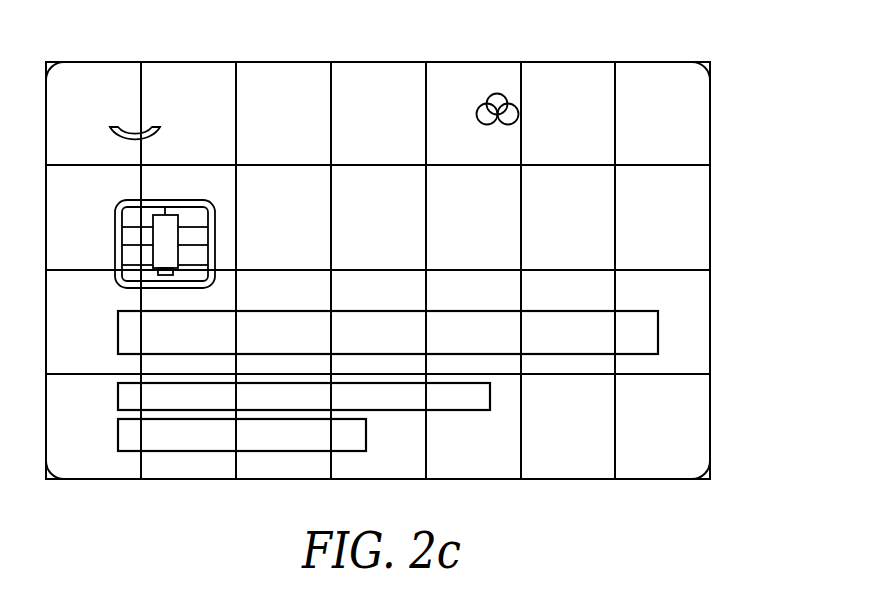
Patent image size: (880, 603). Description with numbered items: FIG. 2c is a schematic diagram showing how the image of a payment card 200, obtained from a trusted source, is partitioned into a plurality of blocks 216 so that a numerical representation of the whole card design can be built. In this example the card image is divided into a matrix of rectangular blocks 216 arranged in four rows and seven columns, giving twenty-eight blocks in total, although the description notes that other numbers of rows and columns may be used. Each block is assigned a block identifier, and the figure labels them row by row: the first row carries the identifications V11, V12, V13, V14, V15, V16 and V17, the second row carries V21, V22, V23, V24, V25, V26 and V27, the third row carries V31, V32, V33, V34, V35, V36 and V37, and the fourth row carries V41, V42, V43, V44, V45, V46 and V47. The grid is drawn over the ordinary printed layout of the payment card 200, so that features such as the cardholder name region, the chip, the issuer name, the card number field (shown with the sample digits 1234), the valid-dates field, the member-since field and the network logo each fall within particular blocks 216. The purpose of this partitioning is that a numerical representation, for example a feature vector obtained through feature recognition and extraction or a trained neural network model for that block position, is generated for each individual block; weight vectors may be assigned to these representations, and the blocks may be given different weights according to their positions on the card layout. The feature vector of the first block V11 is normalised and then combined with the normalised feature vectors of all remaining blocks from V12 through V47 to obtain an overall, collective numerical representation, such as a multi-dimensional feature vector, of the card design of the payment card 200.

The payment card 200 is at (716, 122).
The blocks 216 is at (192, 76).
The printed card number sample 1234 is at (143, 374).
The block identification v11 V11 is at (93, 113).
The block identification v12 V12 is at (188, 113).
The block identification v13 V13 is at (283, 113).
The block identification v14 V14 is at (378, 113).
The block identification v15 V15 is at (473, 113).
The block identification v16 V16 is at (568, 113).
The block identification v17 V17 is at (662, 113).
The block identification v21 V21 is at (93, 217).
The block identification v22 V22 is at (188, 217).
The block identification v23 V23 is at (283, 217).
The block identification v24 V24 is at (378, 217).
The block identification v25 V25 is at (473, 217).
The block identification v26 V26 is at (568, 217).
The block identification v27 V27 is at (662, 217).
The block identification v31 V31 is at (93, 322).
The block identification v32 V32 is at (188, 322).
The block identification v33 V33 is at (283, 322).
The block identification v34 V34 is at (378, 322).
The block identification v35 V35 is at (473, 322).
The block identification v36 V36 is at (568, 322).
The block identification v37 V37 is at (662, 322).
The block identification v41 V41 is at (93, 426).
The block identification v42 V42 is at (188, 426).
The block identification v43 V43 is at (283, 426).
The block identification v44 V44 is at (378, 426).
The block identification v45 V45 is at (473, 426).
The block identification v46 V46 is at (568, 425).
The block identification V47 is at (662, 425).